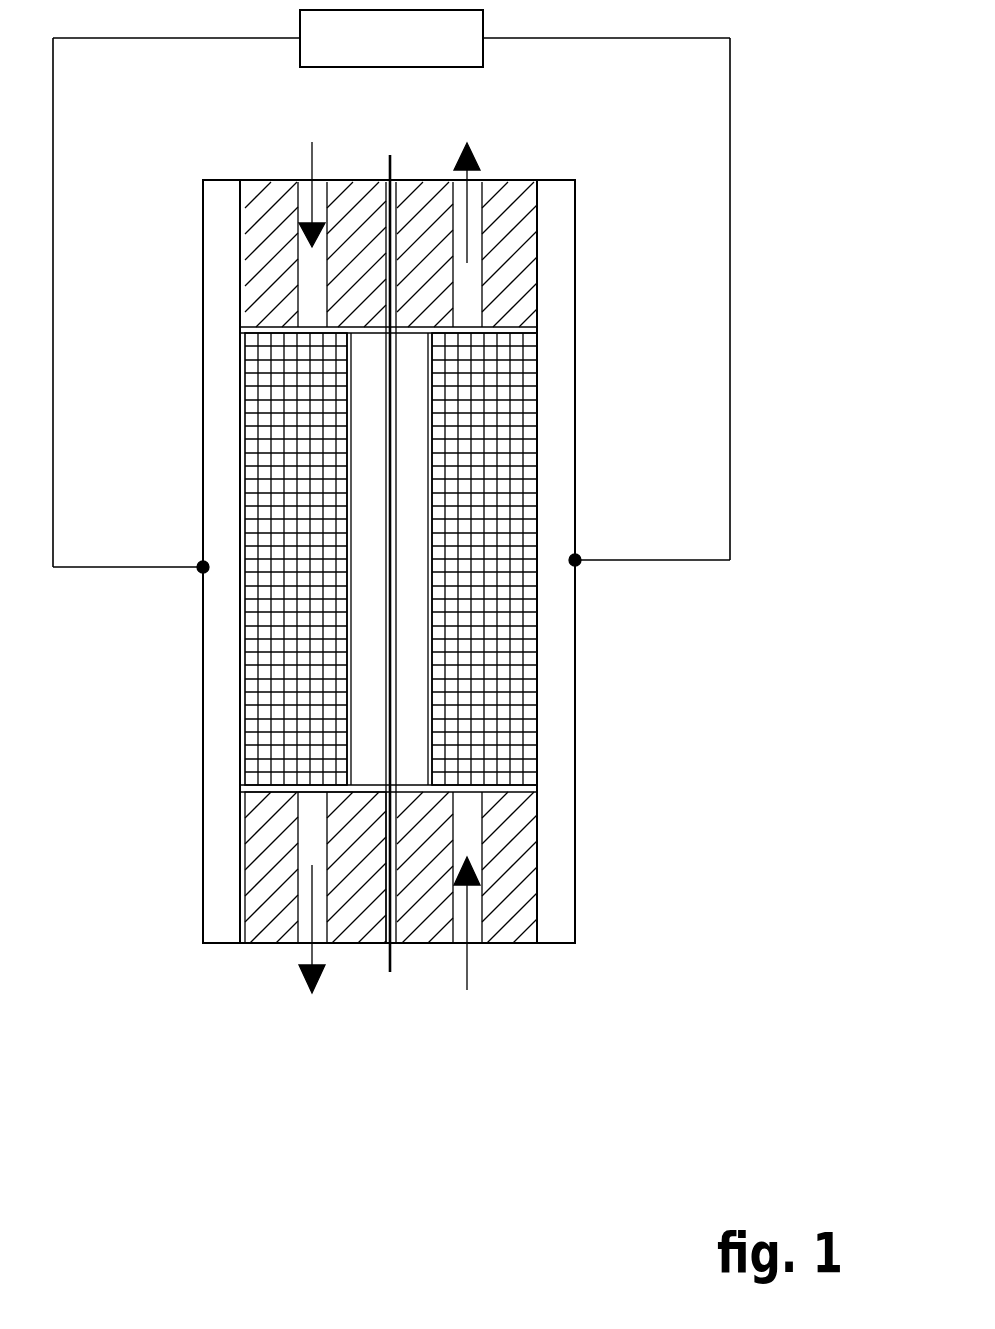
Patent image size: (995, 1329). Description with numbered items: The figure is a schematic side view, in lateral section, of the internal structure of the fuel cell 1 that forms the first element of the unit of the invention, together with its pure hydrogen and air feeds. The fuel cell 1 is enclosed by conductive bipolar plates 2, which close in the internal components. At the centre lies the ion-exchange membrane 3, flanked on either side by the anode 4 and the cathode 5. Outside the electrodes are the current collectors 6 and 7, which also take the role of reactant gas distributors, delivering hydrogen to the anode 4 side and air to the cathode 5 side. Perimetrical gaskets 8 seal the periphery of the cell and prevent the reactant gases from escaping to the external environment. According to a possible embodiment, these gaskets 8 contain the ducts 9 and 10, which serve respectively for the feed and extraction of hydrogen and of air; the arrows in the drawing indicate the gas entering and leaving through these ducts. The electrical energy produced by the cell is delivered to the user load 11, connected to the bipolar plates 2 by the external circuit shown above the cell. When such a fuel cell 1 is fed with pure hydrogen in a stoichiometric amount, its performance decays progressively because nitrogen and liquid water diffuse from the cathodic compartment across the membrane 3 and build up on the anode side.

The fuel cell 1 is at (587, 470).
The conductive bipolar plates 2 is at (227, 870).
The ion-exchange membrane 3 is at (393, 960).
The anode 4 is at (372, 668).
The cathode 5 is at (412, 672).
The current collector 6 is at (297, 573).
The current collector 7 is at (492, 593).
The perimetrical gaskets 8 is at (273, 907).
The duct 9 is at (310, 263).
The duct 10 is at (463, 263).
The user load 11 is at (390, 40).